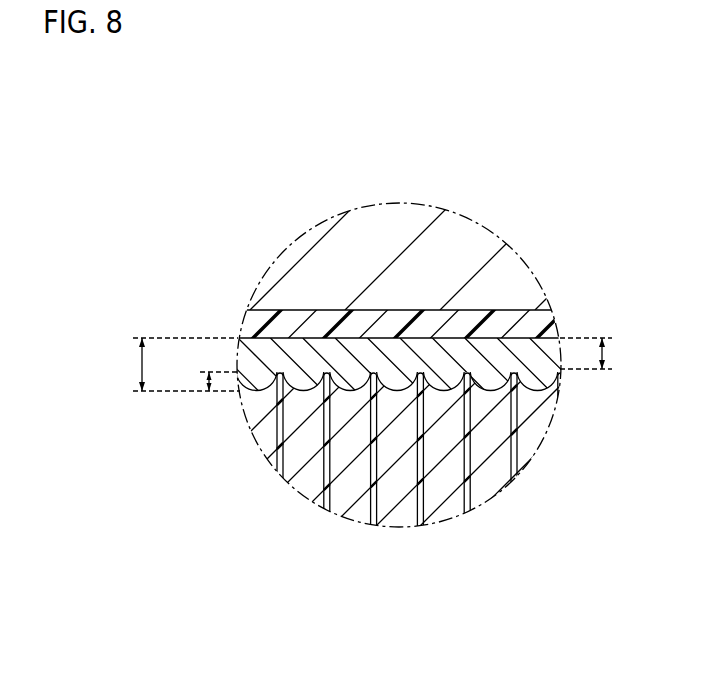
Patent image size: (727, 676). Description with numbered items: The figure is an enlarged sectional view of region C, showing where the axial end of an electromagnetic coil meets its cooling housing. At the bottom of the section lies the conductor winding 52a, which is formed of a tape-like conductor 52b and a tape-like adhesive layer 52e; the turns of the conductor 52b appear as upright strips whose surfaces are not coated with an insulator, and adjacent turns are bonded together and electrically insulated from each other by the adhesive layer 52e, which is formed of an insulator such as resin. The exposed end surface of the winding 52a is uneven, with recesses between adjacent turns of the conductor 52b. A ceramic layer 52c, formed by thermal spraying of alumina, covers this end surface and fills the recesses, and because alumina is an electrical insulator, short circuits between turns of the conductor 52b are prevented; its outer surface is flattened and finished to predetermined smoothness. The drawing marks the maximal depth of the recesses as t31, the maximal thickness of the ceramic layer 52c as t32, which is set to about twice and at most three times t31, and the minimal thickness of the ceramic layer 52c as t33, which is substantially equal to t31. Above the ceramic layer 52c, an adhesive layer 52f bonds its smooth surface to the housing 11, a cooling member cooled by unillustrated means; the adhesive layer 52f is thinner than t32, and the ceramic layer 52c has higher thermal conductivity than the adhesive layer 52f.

The region C is at (305, 229).
The housing 11 is at (465, 239).
The adhesive layer 52f is at (476, 315).
The ceramic layer 52c is at (533, 340).
The adhesive layer 52e is at (413, 513).
The conductor 52b is at (443, 513).
The conductor winding 52a is at (562, 591).
The maximal value of depth of the recesses t31 is at (200, 381).
The maximal value of thickness of the ceramic layer t32 is at (165, 364).
The minimal value of thickness of the ceramic layer t33 is at (606, 353).